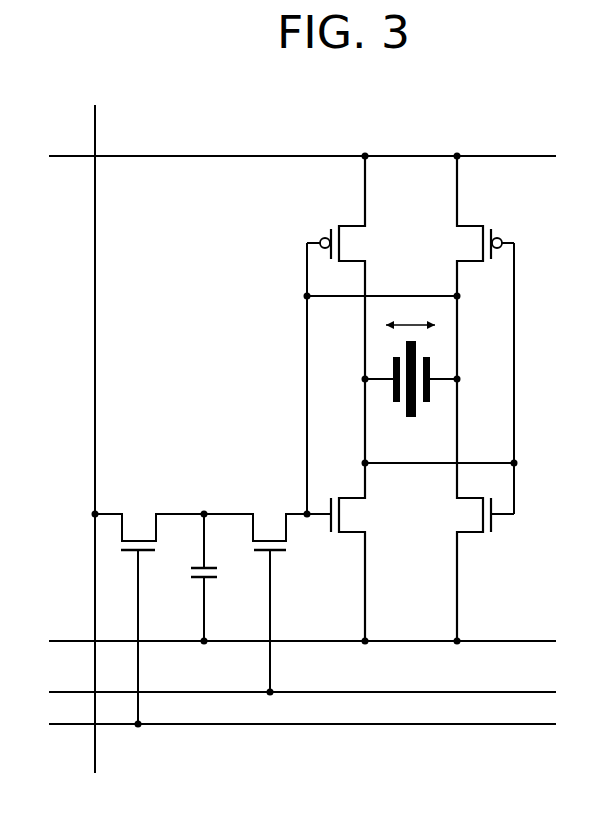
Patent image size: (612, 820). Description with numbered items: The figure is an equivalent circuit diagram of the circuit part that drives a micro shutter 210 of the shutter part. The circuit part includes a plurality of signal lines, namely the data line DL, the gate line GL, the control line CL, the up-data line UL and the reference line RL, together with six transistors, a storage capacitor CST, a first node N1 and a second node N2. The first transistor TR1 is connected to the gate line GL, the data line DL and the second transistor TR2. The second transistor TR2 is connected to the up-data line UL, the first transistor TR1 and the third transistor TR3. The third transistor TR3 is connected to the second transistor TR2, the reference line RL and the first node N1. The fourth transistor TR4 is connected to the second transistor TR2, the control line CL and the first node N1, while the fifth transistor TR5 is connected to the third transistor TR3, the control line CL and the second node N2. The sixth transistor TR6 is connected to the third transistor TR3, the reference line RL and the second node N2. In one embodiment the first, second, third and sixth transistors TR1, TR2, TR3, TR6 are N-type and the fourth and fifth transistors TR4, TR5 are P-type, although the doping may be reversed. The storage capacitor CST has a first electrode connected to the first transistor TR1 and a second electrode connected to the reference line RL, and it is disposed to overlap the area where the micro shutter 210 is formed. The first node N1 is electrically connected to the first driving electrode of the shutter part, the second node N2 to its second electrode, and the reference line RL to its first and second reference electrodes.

The micro shutter 210 is at (415, 343).
The first transistor TR1 is at (137, 606).
The second transistor TR2 is at (269, 590).
The third transistor TR3 is at (364, 515).
The fourth transistor TR4 is at (352, 244).
The fifth transistor TR5 is at (472, 244).
The sixth transistor TR6 is at (472, 515).
The storage capacitor CST is at (219, 577).
The first node N1 is at (364, 379).
The second node N2 is at (459, 379).
The data line DL is at (94, 425).
The control line CL is at (286, 157).
The reference line RL is at (286, 640).
The up-data line UL is at (286, 691).
The gate line GL is at (286, 724).